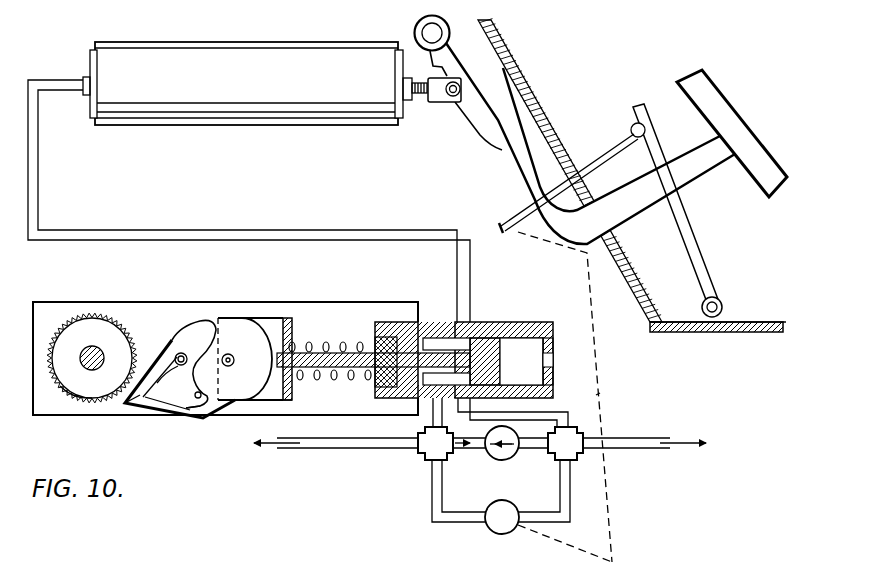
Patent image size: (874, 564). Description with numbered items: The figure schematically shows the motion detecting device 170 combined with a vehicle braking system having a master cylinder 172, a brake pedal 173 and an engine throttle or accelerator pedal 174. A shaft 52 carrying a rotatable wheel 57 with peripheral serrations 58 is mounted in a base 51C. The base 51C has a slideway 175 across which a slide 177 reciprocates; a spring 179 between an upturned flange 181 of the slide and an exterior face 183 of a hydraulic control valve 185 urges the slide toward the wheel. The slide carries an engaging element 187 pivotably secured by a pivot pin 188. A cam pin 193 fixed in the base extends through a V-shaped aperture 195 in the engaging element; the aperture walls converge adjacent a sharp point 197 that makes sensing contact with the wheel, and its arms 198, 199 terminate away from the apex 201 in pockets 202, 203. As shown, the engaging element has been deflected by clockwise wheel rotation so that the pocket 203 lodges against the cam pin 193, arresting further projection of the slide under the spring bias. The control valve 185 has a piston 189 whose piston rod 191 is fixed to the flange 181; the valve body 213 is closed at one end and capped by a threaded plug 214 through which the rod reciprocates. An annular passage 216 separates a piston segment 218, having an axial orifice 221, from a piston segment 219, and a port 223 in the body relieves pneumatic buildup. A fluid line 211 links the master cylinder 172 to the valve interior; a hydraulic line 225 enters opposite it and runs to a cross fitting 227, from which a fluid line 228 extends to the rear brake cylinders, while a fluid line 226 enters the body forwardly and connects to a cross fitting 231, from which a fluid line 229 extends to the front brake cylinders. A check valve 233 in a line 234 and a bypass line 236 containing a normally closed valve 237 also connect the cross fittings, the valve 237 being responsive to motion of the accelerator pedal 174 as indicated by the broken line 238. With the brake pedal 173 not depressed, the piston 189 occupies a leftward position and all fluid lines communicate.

The master cylinder 172 is at (335, 126).
The fluid line 211 is at (293, 236).
The engine throttle 174 is at (650, 124).
The brake pedal 173 is at (727, 161).
The base 51C is at (118, 301).
The motion detecting device 170 is at (346, 299).
The shaft 52 is at (82, 347).
The rotatable element or wheel 57 is at (68, 338).
The serrations 58 is at (70, 394).
The apex 201 is at (147, 414).
The pocket 203 is at (214, 333).
The arm 199 is at (162, 342).
The cam pin 193 is at (163, 366).
The V-shaped aperture 195 is at (167, 394).
The sharp point 197 is at (118, 403).
The arm 198 is at (185, 408).
The engaging element 187 is at (197, 411).
The pocket 202 is at (218, 392).
The slideway 175 is at (240, 313).
The pivot pin 188 is at (228, 354).
The carriage member or slide 177 is at (278, 329).
The upturned flange 181 is at (290, 395).
The exterior face 183 is at (381, 321).
The threaded plug 214 is at (377, 384).
The hydraulic control valve 185 is at (487, 333).
The annular passage 216 is at (440, 325).
The piston segment 218 is at (403, 386).
The axial orifice 221 is at (423, 338).
The piston 189 is at (494, 357).
The spring 179 is at (342, 353).
The piston rod 191 is at (315, 350).
The port 223 is at (552, 366).
The valve body 213 is at (552, 352).
The piston segment 219 is at (552, 378).
The broken line 238 is at (600, 393).
The fluid line 226 is at (432, 418).
The hydraulic line 225 is at (557, 413).
The fluid line 229 is at (352, 450).
The fluid line 228 is at (650, 440).
The line 234 is at (465, 449).
The bypass line 236 is at (457, 521).
The cross fitting 231 is at (427, 459).
The cross fitting 227 is at (582, 455).
The check valve 233 is at (510, 459).
The normally closed valve 237 is at (508, 524).